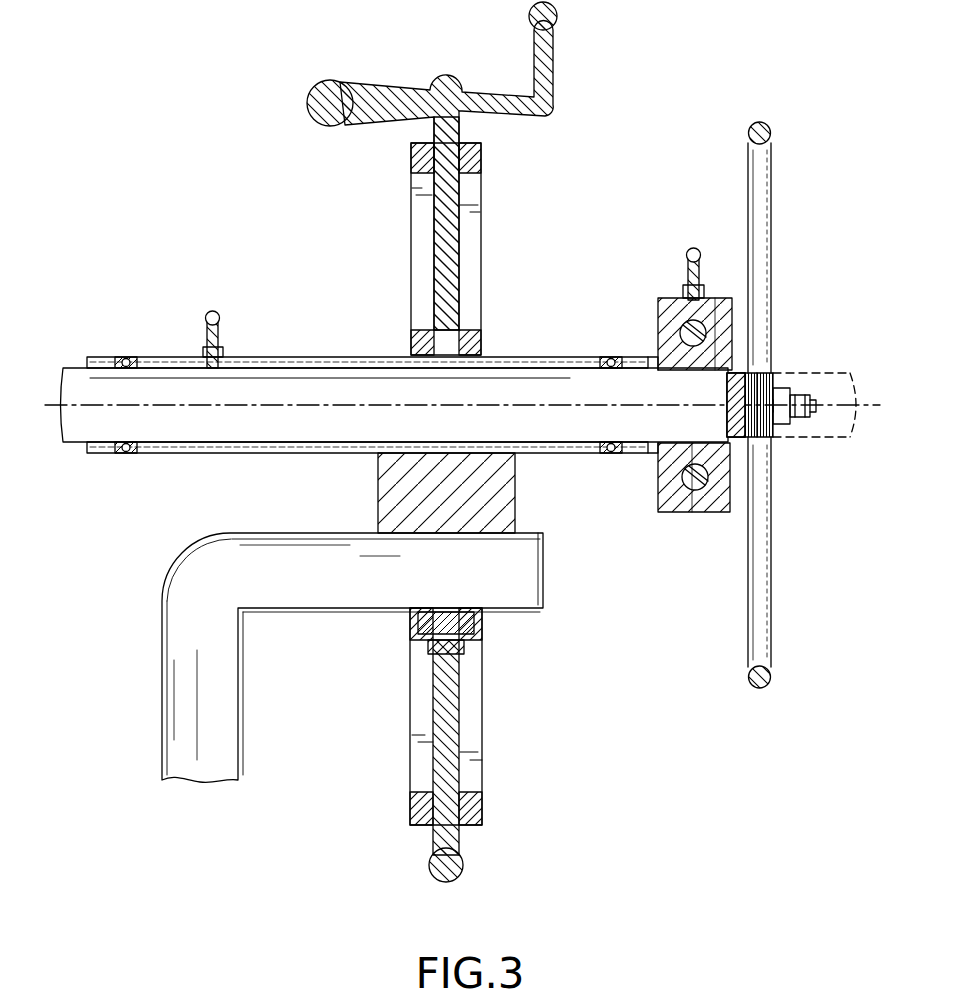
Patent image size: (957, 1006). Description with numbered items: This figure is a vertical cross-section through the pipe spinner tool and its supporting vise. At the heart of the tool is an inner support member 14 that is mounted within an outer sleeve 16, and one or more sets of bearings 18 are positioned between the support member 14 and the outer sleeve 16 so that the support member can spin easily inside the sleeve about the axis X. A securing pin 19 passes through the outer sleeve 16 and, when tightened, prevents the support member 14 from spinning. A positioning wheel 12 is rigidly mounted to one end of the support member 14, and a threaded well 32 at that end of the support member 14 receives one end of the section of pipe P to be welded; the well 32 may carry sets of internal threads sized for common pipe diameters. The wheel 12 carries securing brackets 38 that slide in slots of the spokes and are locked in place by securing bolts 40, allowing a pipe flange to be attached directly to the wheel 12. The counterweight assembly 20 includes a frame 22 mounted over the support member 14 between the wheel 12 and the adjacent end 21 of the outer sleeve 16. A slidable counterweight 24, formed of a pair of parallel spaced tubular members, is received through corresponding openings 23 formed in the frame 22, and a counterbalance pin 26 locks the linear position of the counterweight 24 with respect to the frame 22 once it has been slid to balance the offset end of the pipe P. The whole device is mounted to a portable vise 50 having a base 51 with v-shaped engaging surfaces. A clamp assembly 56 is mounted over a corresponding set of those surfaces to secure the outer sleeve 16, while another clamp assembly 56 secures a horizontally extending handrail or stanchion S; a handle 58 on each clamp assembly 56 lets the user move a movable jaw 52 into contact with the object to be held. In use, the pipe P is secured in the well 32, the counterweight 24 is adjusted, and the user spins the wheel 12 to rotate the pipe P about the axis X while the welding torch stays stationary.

The positioning wheel 12 is at (761, 122).
The inner support member 14 is at (230, 372).
The outer sleeve 16 is at (122, 356).
The bearings 18 is at (150, 357).
The securing pin 19 is at (218, 321).
The counterweight assembly 20 is at (648, 268).
The adjacent end of outer sleeve 21 is at (648, 450).
The frame 22 is at (670, 335).
The openings 23 is at (707, 333).
The slidable counterweight 24 is at (715, 298).
The counterbalance pin 26 is at (693, 250).
The well 32 is at (770, 378).
The securing brackets 38 is at (792, 400).
The securing bolts 40 is at (798, 425).
The portable vise 50 is at (578, 138).
The base 51 is at (380, 492).
The movable jaw 52 is at (437, 655).
The clamp assembly 56 is at (483, 202).
The handle 58 is at (388, 96).
The stanchion S is at (530, 578).
The pipe P is at (815, 449).
The axis x—x X is at (459, 405).